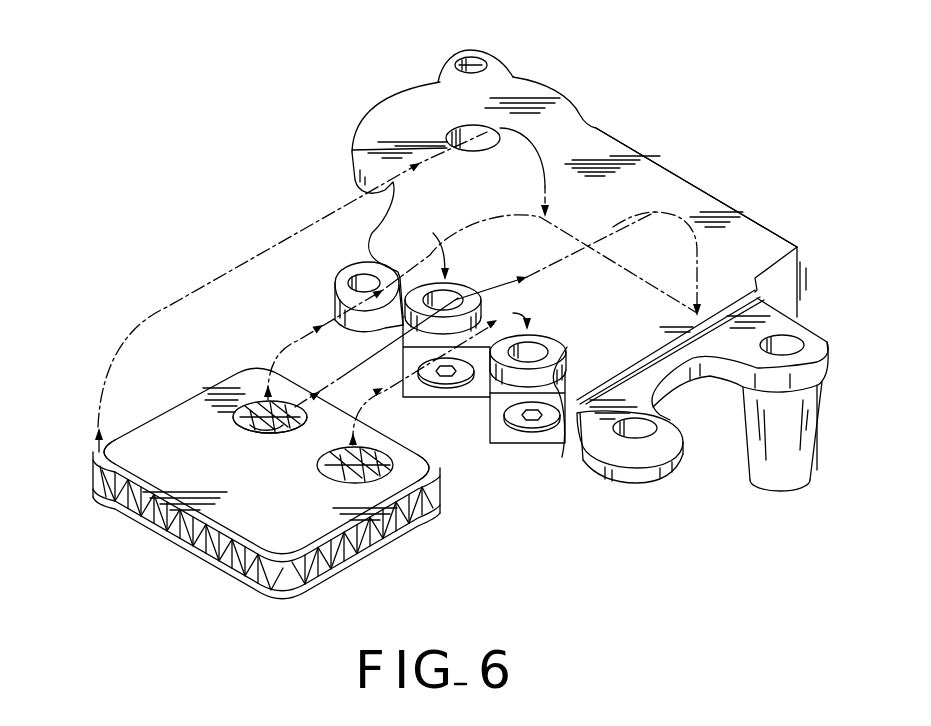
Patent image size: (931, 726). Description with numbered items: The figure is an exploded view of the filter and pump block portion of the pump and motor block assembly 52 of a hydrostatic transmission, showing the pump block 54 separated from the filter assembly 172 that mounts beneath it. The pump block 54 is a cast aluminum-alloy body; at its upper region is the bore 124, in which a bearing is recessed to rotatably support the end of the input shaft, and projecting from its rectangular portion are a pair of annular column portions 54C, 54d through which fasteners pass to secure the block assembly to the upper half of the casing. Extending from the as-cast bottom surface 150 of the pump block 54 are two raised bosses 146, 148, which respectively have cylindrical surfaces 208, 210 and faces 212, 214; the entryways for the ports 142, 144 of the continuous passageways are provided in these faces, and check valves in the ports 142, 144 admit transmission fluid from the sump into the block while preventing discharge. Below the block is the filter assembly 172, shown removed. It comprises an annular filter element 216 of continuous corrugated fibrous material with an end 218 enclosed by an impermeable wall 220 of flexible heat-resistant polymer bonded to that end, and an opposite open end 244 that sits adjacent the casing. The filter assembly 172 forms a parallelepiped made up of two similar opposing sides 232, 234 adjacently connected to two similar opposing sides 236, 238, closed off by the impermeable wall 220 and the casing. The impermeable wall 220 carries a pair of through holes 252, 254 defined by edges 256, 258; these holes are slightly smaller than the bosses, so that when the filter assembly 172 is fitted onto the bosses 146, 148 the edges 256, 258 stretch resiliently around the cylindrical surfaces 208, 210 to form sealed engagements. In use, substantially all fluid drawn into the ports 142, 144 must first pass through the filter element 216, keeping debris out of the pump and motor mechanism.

The pump and motor block assembly 52 is at (594, 123).
The pump block 54 is at (658, 176).
The annular column portion 54C is at (492, 53).
The annular column portion 54d is at (787, 447).
The bore 124 is at (467, 126).
The port 142 is at (522, 357).
The port 144 is at (387, 338).
The boss 146 is at (567, 347).
The boss 148 is at (470, 290).
The bottom surface 150 is at (510, 200).
The filter assembly 172 is at (397, 555).
The cylindrical surface 208 is at (595, 445).
The cylindrical surface 210 is at (588, 292).
The face 212 is at (610, 318).
The face 214 is at (440, 232).
The annular filter element 216 is at (308, 573).
The end 218 is at (322, 551).
The impermeable wall 220 is at (130, 459).
The side 232 is at (183, 393).
The side 234 is at (410, 518).
The side 236 is at (173, 533).
The side 238 is at (390, 423).
The open end 244 is at (255, 410).
The through hole 252 is at (330, 478).
The through hole 254 is at (250, 424).
The edge 256 is at (440, 473).
The edge 258 is at (278, 440).